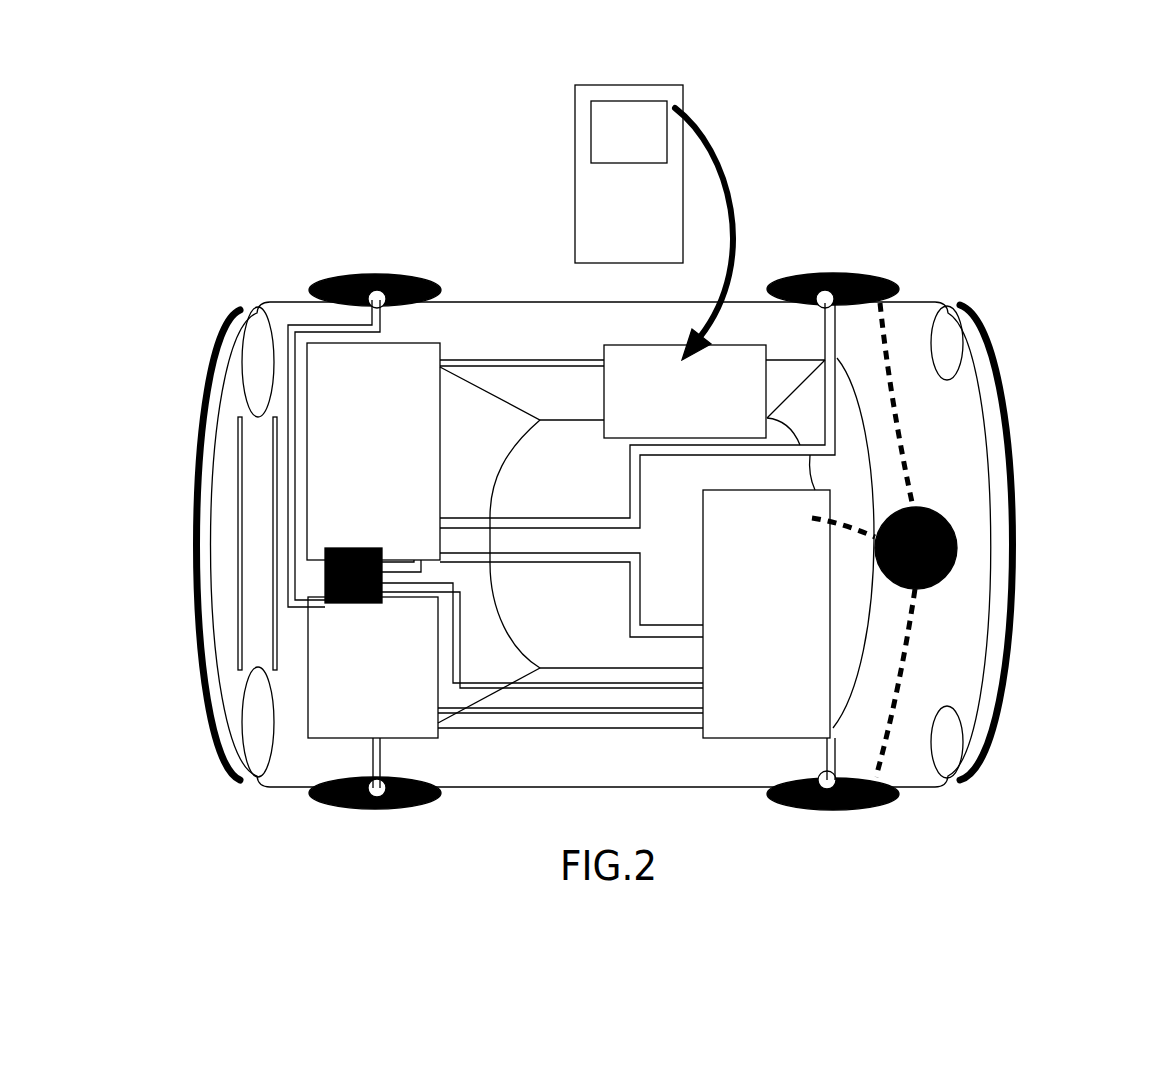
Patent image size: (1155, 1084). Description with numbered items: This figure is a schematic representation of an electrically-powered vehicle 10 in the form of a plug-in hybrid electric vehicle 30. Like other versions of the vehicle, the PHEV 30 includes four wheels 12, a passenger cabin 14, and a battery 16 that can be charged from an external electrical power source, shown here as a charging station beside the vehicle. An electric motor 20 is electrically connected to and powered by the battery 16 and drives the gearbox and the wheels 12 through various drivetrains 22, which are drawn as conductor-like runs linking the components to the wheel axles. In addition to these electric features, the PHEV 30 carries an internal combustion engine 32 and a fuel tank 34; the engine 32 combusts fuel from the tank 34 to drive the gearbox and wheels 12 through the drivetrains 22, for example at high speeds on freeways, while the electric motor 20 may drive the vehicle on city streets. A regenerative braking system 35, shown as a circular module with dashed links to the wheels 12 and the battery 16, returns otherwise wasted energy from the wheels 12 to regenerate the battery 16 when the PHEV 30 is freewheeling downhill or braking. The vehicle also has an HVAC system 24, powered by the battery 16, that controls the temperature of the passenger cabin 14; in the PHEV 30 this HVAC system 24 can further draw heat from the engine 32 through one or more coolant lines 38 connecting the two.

The electrically-powered vehicle 10 is at (1030, 228).
The wheels 12 is at (862, 276).
The passenger cabin 14 is at (513, 380).
The battery 16 is at (817, 628).
The electric motor 20 is at (308, 663).
The drivetrains 22 is at (288, 325).
The HVAC system 24 is at (325, 583).
The plug-in hybrid electric vehicle 30 is at (1035, 282).
The internal combustion engine 32 is at (317, 445).
The fuel tank 34 is at (738, 360).
The regenerative braking system 35 is at (957, 548).
The coolant lines 38 is at (421, 572).